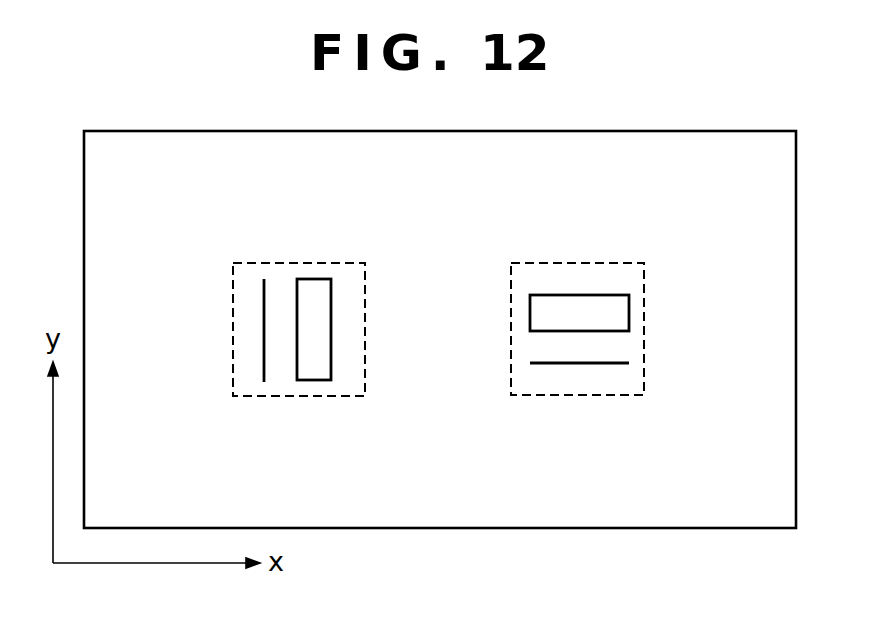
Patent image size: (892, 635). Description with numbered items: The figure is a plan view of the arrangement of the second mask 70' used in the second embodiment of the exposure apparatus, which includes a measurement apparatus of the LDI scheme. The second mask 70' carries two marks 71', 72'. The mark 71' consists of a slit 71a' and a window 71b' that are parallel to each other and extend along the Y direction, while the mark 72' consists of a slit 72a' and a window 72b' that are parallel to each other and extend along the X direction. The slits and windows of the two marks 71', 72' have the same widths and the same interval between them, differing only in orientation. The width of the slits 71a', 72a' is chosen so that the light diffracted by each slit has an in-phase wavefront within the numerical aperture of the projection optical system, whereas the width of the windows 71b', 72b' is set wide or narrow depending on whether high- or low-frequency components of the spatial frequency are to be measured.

The second mask 70' is at (440, 329).
The mark 71' is at (297, 301).
The slit 71a' is at (204, 330).
The window 71b' is at (374, 329).
The mark 72' is at (621, 329).
The slit 72a' is at (579, 407).
The window 72b' is at (630, 297).